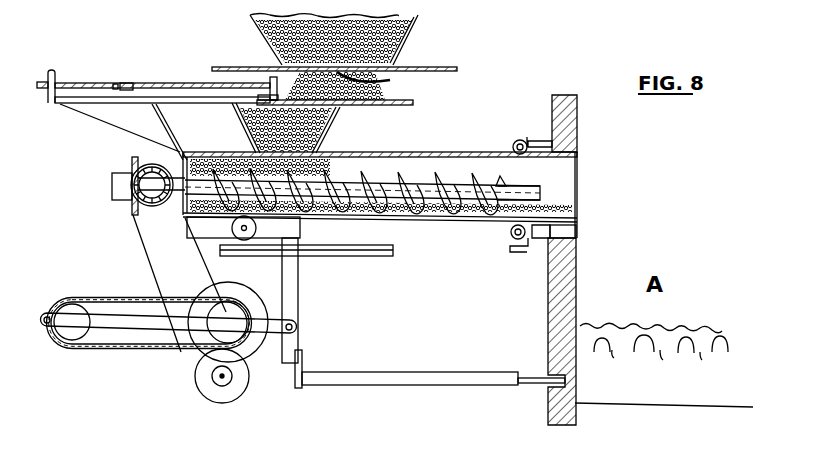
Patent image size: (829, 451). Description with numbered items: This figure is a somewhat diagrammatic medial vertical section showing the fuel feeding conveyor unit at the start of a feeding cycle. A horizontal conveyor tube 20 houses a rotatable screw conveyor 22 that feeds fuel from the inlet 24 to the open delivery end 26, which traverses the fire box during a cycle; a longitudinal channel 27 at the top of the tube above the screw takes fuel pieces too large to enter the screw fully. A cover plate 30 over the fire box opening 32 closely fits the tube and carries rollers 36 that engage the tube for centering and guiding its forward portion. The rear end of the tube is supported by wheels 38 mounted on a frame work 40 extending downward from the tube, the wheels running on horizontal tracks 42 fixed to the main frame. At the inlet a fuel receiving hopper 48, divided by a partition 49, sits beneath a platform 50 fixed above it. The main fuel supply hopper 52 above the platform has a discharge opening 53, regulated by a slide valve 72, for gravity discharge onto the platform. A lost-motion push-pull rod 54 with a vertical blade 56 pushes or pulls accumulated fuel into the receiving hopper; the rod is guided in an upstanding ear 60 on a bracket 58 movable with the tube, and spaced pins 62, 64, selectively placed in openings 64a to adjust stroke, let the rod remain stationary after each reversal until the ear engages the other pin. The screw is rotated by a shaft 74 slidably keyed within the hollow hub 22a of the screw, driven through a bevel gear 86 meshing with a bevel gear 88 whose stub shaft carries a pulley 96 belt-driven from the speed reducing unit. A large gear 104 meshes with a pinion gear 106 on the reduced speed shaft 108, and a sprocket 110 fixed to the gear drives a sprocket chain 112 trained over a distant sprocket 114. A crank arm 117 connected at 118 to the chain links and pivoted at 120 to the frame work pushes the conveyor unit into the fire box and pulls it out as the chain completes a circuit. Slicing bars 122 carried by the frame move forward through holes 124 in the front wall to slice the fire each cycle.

The conveyor tube 20 is at (422, 151).
The screw conveyor 22 is at (472, 179).
The hollow hub 22a is at (519, 189).
The inlet 24 is at (300, 142).
The open delivery end 26 is at (580, 194).
The longitudinal channel 27 is at (444, 156).
The cover plate 30 is at (532, 139).
The fire box opening 32 is at (572, 237).
The rollers 36 is at (518, 140).
The wheels 38 is at (245, 241).
The frame work 40 is at (278, 230).
The horizontal tracks 42 is at (365, 257).
The fuel receiving hopper 48 is at (339, 121).
The partition 49 is at (236, 118).
The platform 50 is at (414, 104).
The main fuel supply hopper 52 is at (411, 35).
The discharge opening 53 is at (374, 79).
The push-pull rod 54 is at (181, 83).
The vertical blade 56 is at (270, 80).
The bracket 58 is at (85, 103).
The upstanding ear 60 is at (53, 70).
The pin 62 is at (40, 82).
The pin 64 is at (124, 83).
The openings 64a is at (115, 84).
The slide valve 72 is at (234, 66).
The shaft 74 is at (178, 186).
The bevel gear 86 is at (131, 165).
The bevel gear 88 is at (158, 170).
The pulley 96 is at (160, 207).
The gear 104 is at (243, 355).
The pinion gear 106 is at (238, 386).
The reduced speed shaft 108 is at (219, 377).
The sprocket 110 is at (231, 305).
The sprocket chain 112 is at (122, 349).
The sprocket 114 is at (58, 301).
The crank arm 117 is at (283, 323).
The connection 118 is at (43, 320).
The pivotal connection 120 is at (294, 327).
The slicing bars 122 is at (366, 373).
The holes 124 is at (545, 385).